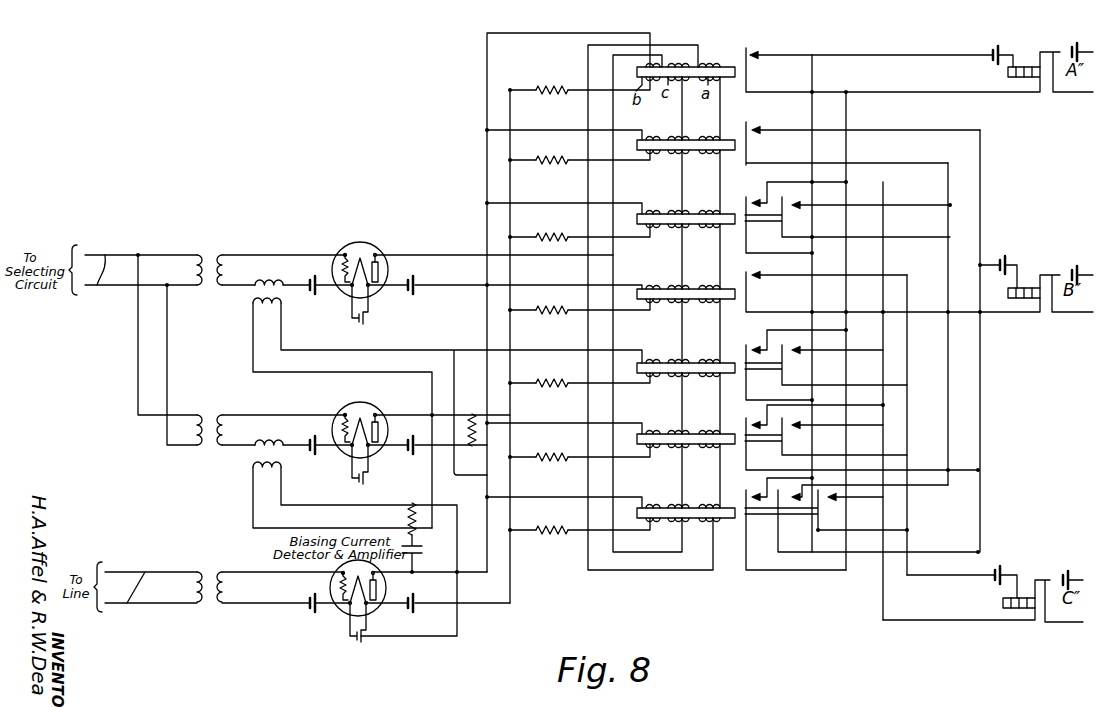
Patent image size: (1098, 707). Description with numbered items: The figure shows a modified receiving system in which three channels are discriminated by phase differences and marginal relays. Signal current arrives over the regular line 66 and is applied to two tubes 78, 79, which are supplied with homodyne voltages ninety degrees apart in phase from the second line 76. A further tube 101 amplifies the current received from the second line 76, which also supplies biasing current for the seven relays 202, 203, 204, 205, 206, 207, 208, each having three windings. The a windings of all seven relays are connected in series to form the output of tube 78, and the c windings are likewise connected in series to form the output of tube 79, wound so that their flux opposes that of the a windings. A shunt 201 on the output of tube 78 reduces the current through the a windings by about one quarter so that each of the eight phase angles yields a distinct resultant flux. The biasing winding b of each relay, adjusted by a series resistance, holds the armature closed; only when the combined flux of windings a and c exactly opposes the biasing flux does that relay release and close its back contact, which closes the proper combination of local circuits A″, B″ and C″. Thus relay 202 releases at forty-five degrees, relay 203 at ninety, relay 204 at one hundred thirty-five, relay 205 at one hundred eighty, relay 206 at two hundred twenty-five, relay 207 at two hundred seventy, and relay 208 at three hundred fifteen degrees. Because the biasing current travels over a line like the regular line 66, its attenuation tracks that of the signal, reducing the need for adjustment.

The regular line 66 is at (105, 255).
The second line 76 is at (145, 572).
The vacuum tube 79 is at (352, 245).
The vacuum tube 78 is at (352, 405).
The amplifier tube 101 is at (340, 608).
The shunt 201 is at (473, 410).
The relay 202 is at (731, 66).
The relay 203 is at (740, 140).
The relay 204 is at (733, 213).
The relay 205 is at (730, 289).
The relay 206 is at (730, 363).
The relay 207 is at (730, 434).
The relay 208 is at (730, 508).